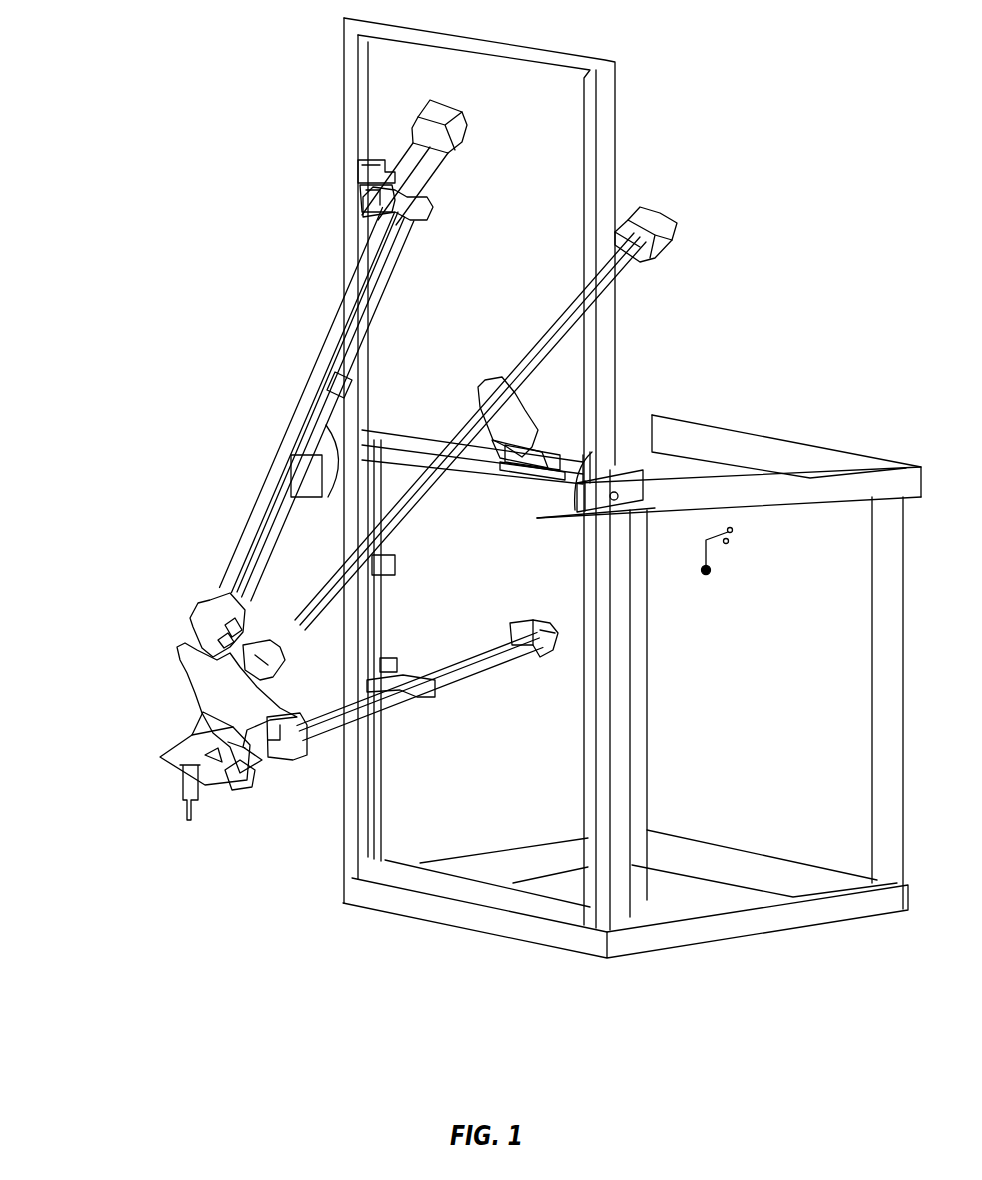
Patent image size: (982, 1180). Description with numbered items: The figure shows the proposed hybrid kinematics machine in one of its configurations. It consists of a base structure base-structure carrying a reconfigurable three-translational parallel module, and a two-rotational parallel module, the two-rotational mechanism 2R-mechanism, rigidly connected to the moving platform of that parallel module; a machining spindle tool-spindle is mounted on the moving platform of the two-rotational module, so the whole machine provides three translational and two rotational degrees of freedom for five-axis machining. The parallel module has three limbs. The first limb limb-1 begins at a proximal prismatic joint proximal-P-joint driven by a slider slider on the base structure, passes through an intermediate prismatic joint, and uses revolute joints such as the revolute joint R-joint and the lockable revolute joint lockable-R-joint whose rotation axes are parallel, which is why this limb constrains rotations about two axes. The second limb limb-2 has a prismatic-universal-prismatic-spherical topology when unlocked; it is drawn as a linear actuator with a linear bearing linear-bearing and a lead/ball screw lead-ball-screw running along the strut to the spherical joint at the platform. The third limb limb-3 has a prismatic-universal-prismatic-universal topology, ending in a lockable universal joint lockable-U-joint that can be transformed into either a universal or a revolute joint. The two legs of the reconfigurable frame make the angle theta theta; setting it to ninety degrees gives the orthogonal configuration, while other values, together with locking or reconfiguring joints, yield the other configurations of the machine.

The base structure base-structure is at (892, 715).
The element slider is at (633, 495).
The limb 1 limb-1 is at (565, 310).
The limb 2 limb-2 is at (435, 170).
The limb 3 limb-3 is at (492, 660).
The linear bearing linear-bearing is at (340, 383).
The lead/ball screw lead-ball-screw is at (335, 432).
The angle θ theta is at (306, 476).
The R joint R-joint is at (527, 447).
The proximal P joint proximal-P-joint is at (527, 455).
The lockable R joint lockable-R-joint is at (268, 650).
The 2R mechanism 2R-mechanism is at (158, 768).
The tool spindle tool-spindle is at (188, 822).
The lockable/reconfigurable U joint lockable-U-joint is at (400, 672).